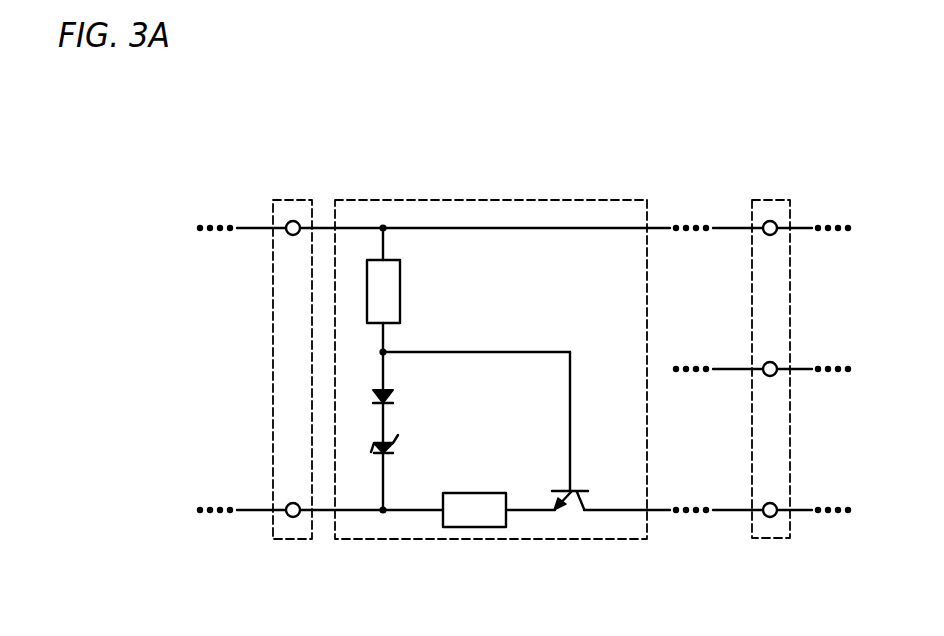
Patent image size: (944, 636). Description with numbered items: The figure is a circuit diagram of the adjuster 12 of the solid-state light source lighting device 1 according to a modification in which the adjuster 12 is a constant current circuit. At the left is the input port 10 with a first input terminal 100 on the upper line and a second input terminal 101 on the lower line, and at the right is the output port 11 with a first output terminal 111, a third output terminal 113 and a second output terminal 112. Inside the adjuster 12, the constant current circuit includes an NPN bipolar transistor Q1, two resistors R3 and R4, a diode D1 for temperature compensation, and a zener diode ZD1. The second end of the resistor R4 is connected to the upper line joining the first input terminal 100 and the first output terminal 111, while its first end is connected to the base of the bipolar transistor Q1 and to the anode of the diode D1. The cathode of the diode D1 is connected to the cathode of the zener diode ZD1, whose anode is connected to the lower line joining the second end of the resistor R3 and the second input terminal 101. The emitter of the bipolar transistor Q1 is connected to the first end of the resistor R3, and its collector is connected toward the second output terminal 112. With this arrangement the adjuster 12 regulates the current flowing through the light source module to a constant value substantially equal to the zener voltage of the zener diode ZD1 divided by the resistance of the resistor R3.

The solid-state light source lighting device 1 is at (655, 157).
The input port 10 is at (288, 199).
The output port 11 is at (777, 199).
The adjuster 12 is at (538, 199).
The first input terminal 100 is at (287, 223).
The second input terminal 101 is at (287, 513).
The first output terminal 111 is at (764, 225).
The second output terminal 112 is at (764, 515).
The third output terminal 113 is at (765, 373).
The resistor R4 is at (392, 294).
The resistor R3 is at (487, 500).
The diode D1 is at (397, 399).
The zener diode ZD1 is at (403, 447).
The NPN bipolar transistor Q1 is at (589, 498).